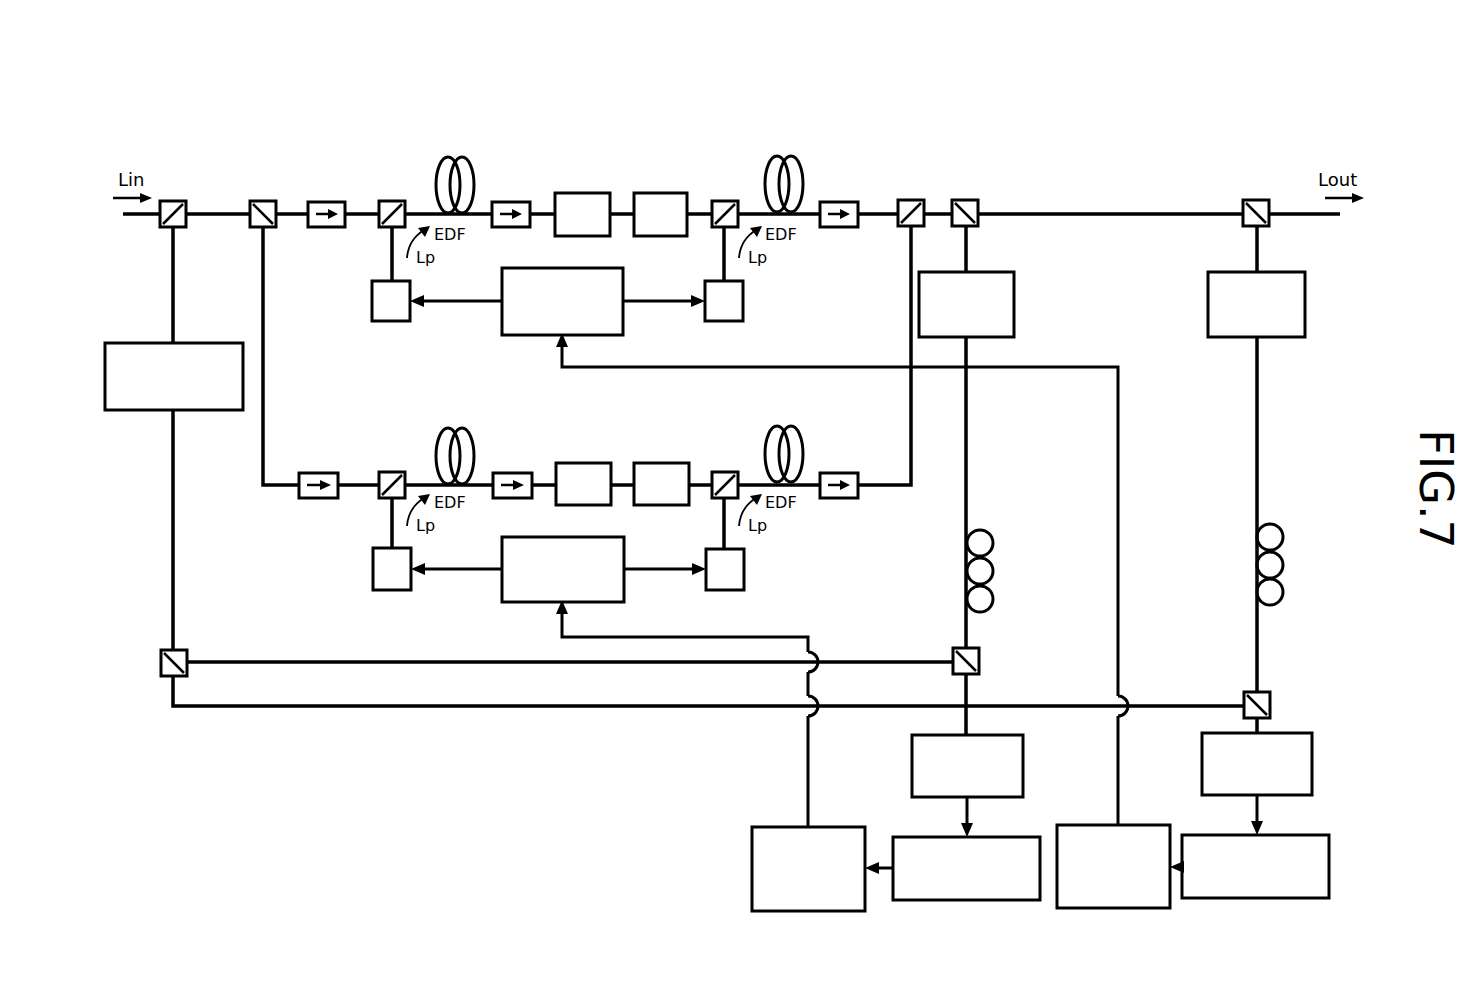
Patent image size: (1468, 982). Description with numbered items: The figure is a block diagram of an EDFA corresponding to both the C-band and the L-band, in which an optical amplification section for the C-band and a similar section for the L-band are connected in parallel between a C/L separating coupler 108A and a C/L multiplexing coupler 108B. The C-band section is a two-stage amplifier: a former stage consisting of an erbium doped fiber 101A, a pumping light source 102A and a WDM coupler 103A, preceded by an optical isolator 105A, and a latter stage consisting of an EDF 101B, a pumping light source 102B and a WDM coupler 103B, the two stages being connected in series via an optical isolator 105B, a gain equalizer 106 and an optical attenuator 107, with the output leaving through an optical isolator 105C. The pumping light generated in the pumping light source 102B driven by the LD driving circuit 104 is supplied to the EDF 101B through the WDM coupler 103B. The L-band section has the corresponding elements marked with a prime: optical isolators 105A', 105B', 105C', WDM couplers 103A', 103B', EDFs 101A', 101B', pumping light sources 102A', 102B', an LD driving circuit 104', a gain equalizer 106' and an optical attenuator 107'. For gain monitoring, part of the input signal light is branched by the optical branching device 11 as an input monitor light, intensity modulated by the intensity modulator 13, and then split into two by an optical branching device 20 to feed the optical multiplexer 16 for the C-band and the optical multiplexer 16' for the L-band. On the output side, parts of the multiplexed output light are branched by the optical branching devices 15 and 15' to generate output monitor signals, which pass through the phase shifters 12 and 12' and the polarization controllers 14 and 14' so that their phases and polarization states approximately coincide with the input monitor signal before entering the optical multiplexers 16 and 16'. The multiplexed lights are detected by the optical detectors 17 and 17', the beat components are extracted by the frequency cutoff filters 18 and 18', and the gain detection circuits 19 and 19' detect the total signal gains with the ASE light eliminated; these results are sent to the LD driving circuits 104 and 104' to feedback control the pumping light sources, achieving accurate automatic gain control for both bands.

The optical branching device 11 is at (176, 200).
The intensity modulator 13 is at (193, 343).
The optical branching device 20 is at (190, 655).
The C/L separating coupler 108A is at (284, 181).
The C/L multiplexing coupler 108B is at (917, 200).
The optical isolator 105A is at (339, 193).
The optical isolator 105B is at (524, 193).
The optical isolator 105C is at (850, 189).
The WDM coupler 103A is at (403, 220).
The WDM coupler 103B is at (737, 220).
The erbium doped fiber 101A is at (464, 160).
The erbium doped fiber 101B is at (796, 158).
The pumping light source 102A is at (371, 278).
The pumping light source 102B is at (760, 294).
The LD driving circuit 104 is at (557, 300).
The gain equalizer 106 is at (585, 193).
The optical attenuator 107 is at (665, 193).
The optical isolator 105A' is at (331, 462).
The optical isolator 105B' is at (526, 462).
The optical isolator 105C' is at (854, 462).
The WDM coupler 103A' is at (407, 487).
The WDM coupler 103B' is at (740, 488).
The erbium doped fiber 101A' is at (467, 429).
The erbium doped fiber 101B' is at (800, 427).
The pumping light source 102A' is at (372, 547).
The pumping light source 102B' is at (763, 563).
The LD driving circuit 104' is at (558, 568).
The gain equalizer 106' is at (587, 461).
The optical attenuator 107' is at (667, 461).
The optical branching device 15 is at (1262, 188).
The optical branching device 15' is at (974, 188).
The phase shifter 12 is at (1282, 304).
The phase shifter 12' is at (995, 304).
The polarization controller 14 is at (1291, 564).
The polarization controller 14' is at (1004, 571).
The optical multiplexer 16 is at (1280, 694).
The optical multiplexer 16' is at (992, 649).
The optical detector 17 is at (1283, 782).
The optical detector 17' is at (996, 785).
The frequency cutoff filter 18 is at (1275, 857).
The frequency cutoff filter 18' is at (968, 846).
The gain detection circuit 19 is at (1113, 844).
The gain detection circuit 19' is at (809, 846).